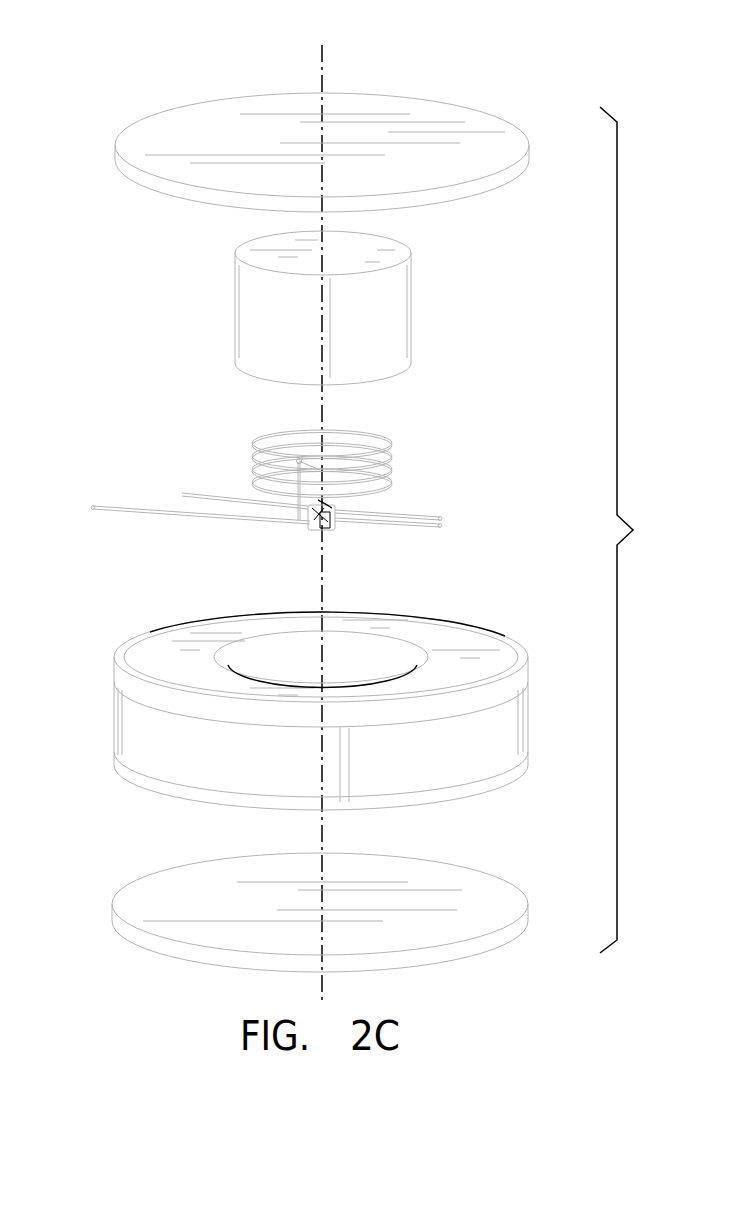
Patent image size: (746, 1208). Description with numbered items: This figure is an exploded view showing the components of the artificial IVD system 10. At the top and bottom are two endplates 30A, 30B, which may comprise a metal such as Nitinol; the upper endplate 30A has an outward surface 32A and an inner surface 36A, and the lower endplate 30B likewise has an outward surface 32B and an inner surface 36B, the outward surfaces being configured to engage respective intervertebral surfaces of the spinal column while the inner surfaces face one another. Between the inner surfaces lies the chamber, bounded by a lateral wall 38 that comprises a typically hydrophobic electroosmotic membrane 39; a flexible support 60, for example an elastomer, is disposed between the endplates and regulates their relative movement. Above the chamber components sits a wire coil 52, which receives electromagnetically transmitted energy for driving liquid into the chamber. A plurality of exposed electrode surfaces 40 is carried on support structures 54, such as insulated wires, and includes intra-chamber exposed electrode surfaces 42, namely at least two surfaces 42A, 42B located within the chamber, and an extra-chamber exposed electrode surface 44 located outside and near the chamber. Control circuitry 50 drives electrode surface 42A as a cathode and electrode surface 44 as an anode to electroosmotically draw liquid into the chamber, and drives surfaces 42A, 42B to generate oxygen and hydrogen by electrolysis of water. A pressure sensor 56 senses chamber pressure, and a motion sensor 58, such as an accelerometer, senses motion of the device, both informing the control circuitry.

The artificial IVD system 10 is at (632, 530).
The endplate 30A is at (297, 155).
The outward surface 32A is at (203, 130).
The inner surface 36A is at (485, 197).
The wire coil 52 is at (284, 442).
The control circuitry 50 is at (327, 528).
The motion sensor 58 is at (322, 508).
The exposed electrode surfaces 40 is at (323, 490).
The extra-chamber exposed electrode surface 44 is at (93, 506).
The intra-chamber exposed electrode surfaces 42 is at (354, 470).
The intra-chamber exposed electrode surface 42A is at (178, 494).
The intra-chamber exposed electrode surface 42B is at (440, 518).
The support structure 54 is at (354, 490).
The pressure sensor 56 is at (440, 526).
The lateral wall 38 is at (314, 711).
The electroosmotic membrane 39 is at (314, 711).
The flexible support 60 is at (510, 723).
The endplate 30B is at (296, 919).
The inner surface 36B is at (425, 893).
The outward surface 32B is at (491, 955).